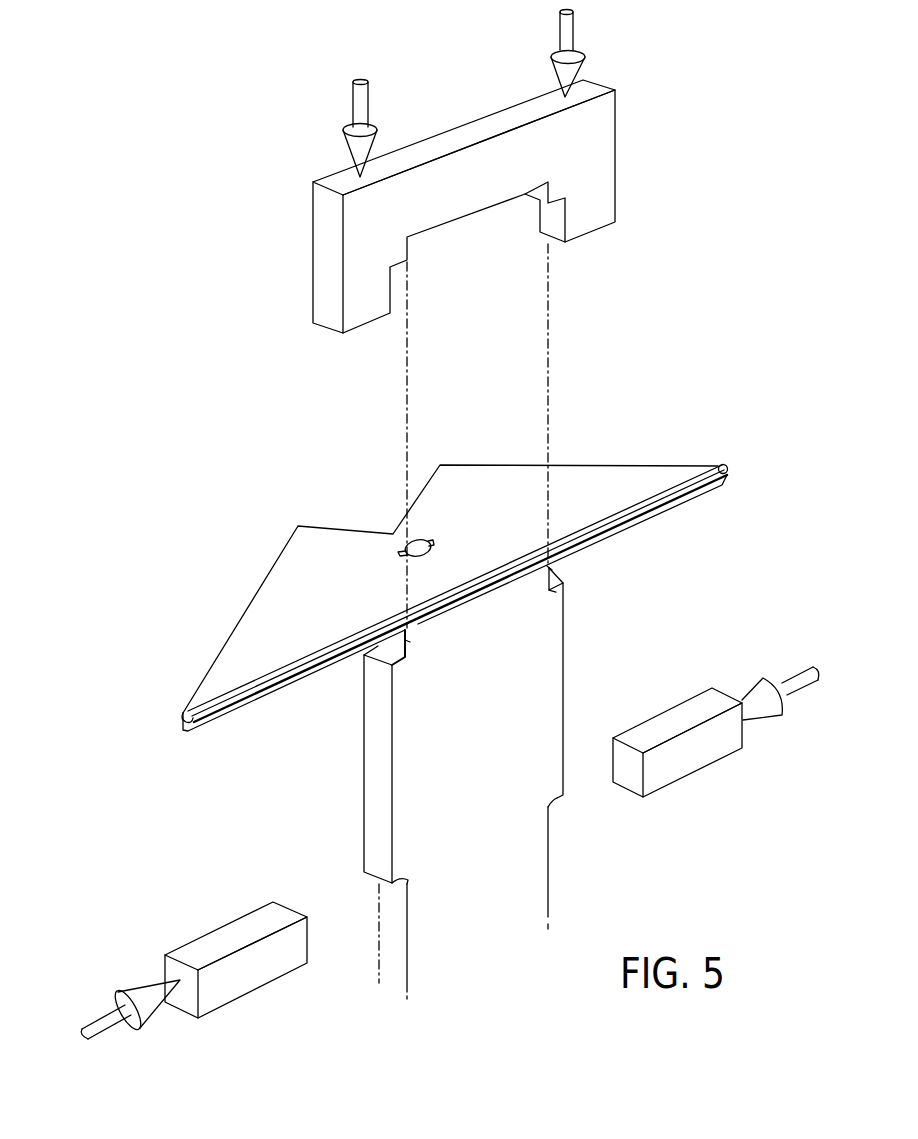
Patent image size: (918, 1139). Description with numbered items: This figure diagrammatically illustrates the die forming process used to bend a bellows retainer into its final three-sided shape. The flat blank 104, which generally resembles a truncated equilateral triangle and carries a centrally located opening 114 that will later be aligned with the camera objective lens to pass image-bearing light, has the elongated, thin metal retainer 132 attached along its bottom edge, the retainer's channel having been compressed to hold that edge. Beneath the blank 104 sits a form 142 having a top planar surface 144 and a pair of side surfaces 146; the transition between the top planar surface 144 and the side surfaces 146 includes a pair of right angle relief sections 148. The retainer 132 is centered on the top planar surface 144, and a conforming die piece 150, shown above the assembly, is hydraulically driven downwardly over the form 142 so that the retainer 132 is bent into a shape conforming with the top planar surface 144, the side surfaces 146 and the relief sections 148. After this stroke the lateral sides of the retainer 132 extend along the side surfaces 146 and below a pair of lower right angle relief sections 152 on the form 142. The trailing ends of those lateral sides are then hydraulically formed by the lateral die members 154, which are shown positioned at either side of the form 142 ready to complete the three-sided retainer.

The blank 104 is at (278, 590).
The opening 114 is at (422, 541).
The retainer 132 is at (720, 462).
The form 142 is at (552, 694).
The top planar surface 144 is at (555, 567).
The side surfaces 146 is at (370, 773).
The right angle relief sections 148 is at (553, 591).
The die piece 150 is at (453, 213).
The lower right angle relief sections 152 is at (405, 880).
The lateral die members 154 is at (255, 978).